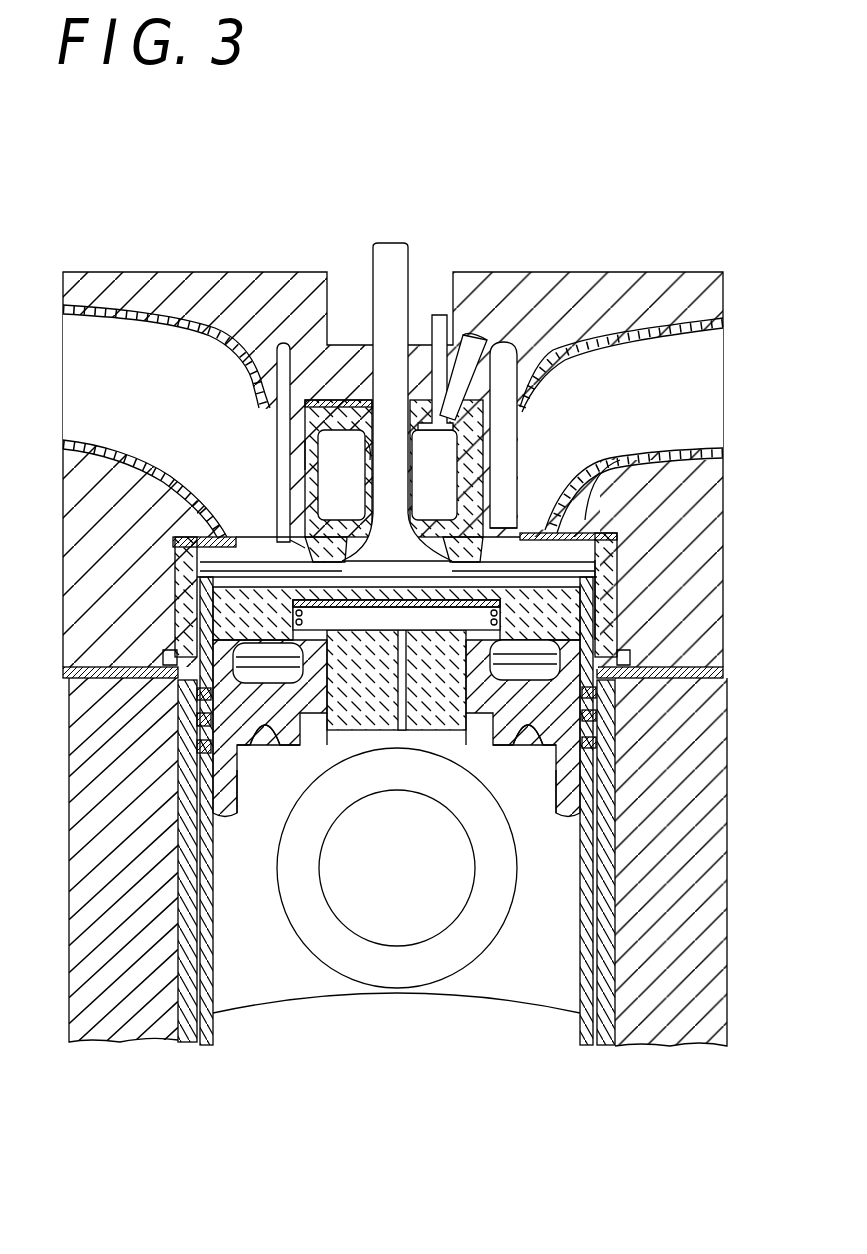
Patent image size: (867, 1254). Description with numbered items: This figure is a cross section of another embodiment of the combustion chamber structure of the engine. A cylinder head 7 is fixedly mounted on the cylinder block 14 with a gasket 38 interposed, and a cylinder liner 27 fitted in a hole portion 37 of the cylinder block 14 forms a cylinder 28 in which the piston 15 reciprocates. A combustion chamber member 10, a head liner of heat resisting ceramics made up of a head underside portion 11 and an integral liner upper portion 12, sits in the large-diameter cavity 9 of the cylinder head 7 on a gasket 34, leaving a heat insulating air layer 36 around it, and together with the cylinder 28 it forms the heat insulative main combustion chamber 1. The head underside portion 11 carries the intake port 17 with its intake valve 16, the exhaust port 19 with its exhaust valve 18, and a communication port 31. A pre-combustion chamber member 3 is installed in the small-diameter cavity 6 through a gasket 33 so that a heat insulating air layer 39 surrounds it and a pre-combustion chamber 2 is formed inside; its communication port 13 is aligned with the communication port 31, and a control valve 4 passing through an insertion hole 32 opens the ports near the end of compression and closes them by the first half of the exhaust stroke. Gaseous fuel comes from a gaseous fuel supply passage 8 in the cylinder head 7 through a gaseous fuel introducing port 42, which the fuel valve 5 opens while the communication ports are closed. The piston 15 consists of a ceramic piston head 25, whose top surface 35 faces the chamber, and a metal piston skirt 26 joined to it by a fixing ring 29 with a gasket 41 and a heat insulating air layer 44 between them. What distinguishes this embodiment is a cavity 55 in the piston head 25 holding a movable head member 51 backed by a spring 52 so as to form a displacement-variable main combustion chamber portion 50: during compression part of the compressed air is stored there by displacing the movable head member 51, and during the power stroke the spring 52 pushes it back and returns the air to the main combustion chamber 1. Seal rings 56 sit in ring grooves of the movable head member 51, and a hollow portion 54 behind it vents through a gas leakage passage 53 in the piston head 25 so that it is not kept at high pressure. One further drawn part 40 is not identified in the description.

The main combustion chamber 1 is at (297, 742).
The pre-combustion chamber 2 is at (422, 500).
The pre-combustion chamber member 3 is at (337, 403).
The control valve 4 is at (402, 551).
The fuel valve 5 is at (430, 400).
The small-diameter cavity 6 is at (477, 443).
The cylinder head 7 is at (665, 522).
The gaseous fuel supply passage 8 is at (468, 357).
The large-diameter cavity 9 is at (173, 590).
The combustion chamber member 10 is at (188, 535).
The head underside portion 11 is at (497, 527).
The liner upper portion 12 is at (600, 628).
The communication port 13 is at (440, 700).
The cylinder block 14 is at (117, 775).
The piston 15 is at (537, 700).
The intake valve 16 is at (507, 470).
The intake port 17 is at (672, 390).
The exhaust valve 18 is at (300, 545).
The exhaust port 19 is at (137, 373).
The piston head 25 is at (300, 700).
The piston skirt 26 is at (583, 903).
The cylinder liner 27 is at (190, 813).
The cylinder 28 is at (213, 930).
The fixing ring 29 is at (481, 690).
The communication port 31 is at (349, 617).
The insertion hole 32 is at (342, 475).
The gasket 33 is at (357, 397).
The gasket 34 is at (588, 520).
The top surface 35 is at (265, 690).
The heat insulating air layer 36 is at (173, 547).
The hole portion 37 is at (197, 871).
The gasket 38 is at (697, 673).
The heat insulating air layer 39 is at (313, 452).
The valve seat 40 is at (513, 598).
The gasket 41 is at (173, 650).
The gaseous fuel introducing port 42 is at (477, 343).
The heat insulating air layer 44 is at (534, 665).
The displacement-variable main combustion chamber portion 50 is at (389, 600).
The movable head member 51 is at (350, 477).
The spring 52 is at (272, 542).
The gas leakage passage 53 is at (426, 600).
The hollow portion 54 is at (332, 745).
The cavity 55 is at (502, 670).
The seal rings 56 is at (290, 750).